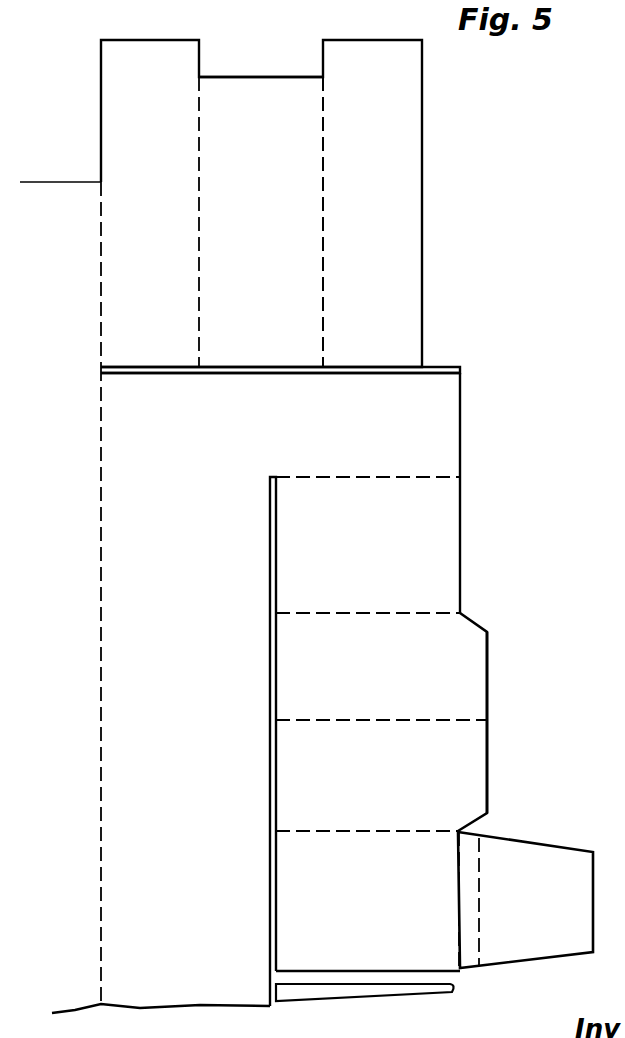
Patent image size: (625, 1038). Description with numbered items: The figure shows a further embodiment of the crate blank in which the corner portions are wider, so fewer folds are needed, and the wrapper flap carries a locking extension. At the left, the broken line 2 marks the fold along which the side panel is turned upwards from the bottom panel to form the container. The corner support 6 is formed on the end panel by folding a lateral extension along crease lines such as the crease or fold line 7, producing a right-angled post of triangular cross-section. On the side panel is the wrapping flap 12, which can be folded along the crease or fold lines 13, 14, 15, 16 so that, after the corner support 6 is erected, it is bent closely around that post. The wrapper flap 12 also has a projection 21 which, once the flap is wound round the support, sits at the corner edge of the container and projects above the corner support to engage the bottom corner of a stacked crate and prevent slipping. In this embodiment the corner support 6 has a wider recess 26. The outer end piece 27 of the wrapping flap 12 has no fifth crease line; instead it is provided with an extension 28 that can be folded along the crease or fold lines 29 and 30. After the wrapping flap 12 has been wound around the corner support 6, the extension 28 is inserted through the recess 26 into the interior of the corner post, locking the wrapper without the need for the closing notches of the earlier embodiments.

The broken line 2 is at (103, 600).
The corner support 6 is at (306, 252).
The crease or fold line 7 is at (323, 104).
The wrapping flap 12 is at (453, 655).
The crease or fold line 13 is at (433, 475).
The crease or fold line 14 is at (428, 612).
The crease or fold line 15 is at (457, 720).
The crease or fold line 16 is at (400, 830).
The projection 21 is at (489, 752).
The recess 26 is at (270, 60).
The end piece 27 is at (415, 948).
The extension 28 is at (558, 940).
The crease or fold line 29 is at (480, 864).
The crease or fold line 30 is at (458, 906).